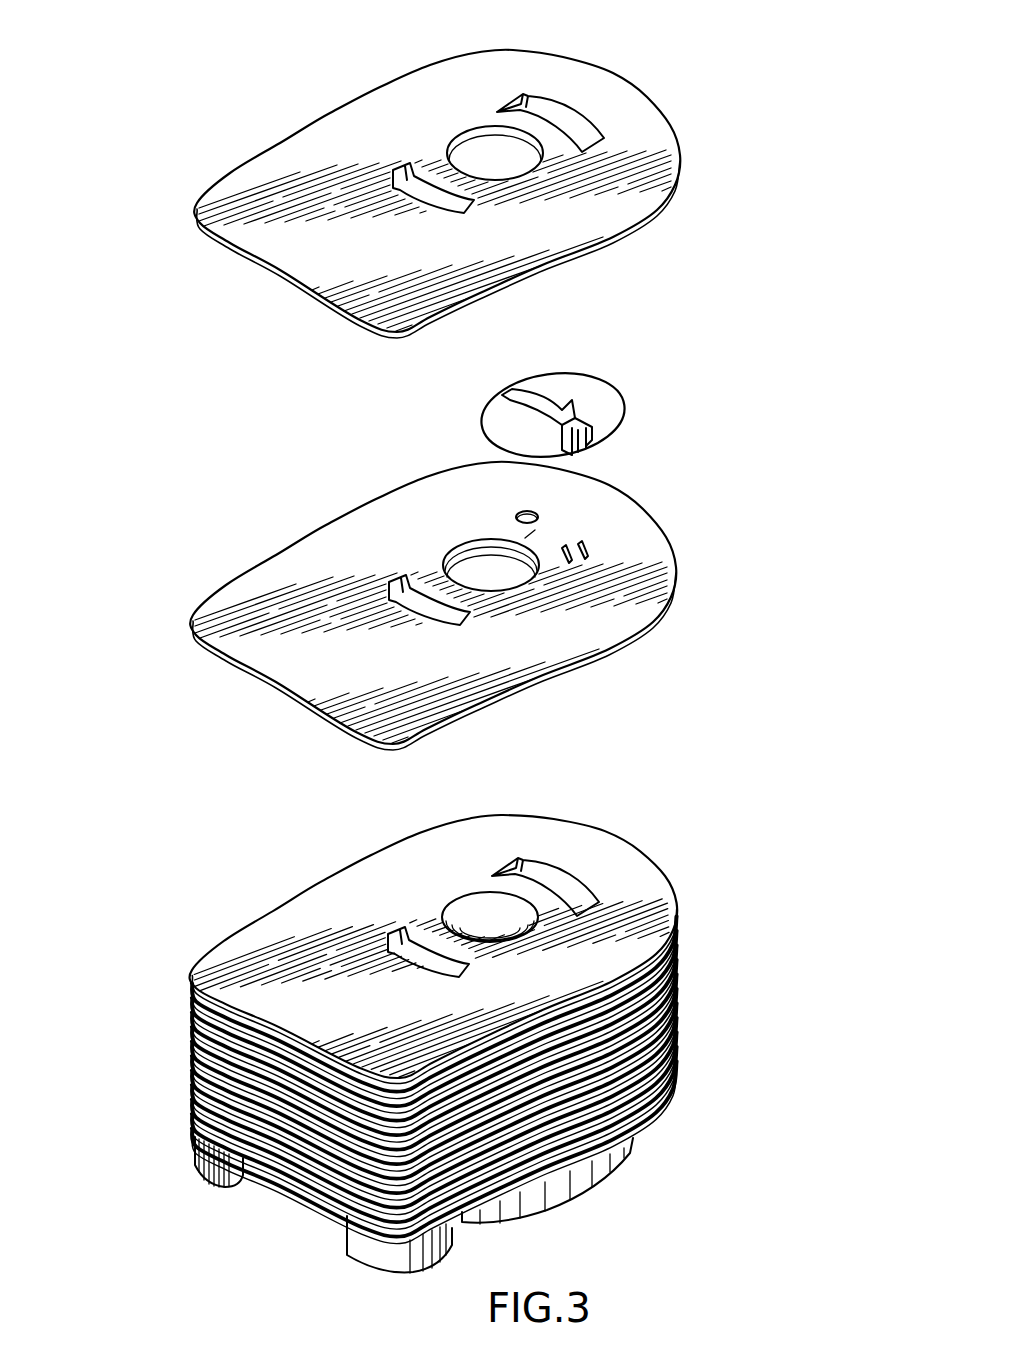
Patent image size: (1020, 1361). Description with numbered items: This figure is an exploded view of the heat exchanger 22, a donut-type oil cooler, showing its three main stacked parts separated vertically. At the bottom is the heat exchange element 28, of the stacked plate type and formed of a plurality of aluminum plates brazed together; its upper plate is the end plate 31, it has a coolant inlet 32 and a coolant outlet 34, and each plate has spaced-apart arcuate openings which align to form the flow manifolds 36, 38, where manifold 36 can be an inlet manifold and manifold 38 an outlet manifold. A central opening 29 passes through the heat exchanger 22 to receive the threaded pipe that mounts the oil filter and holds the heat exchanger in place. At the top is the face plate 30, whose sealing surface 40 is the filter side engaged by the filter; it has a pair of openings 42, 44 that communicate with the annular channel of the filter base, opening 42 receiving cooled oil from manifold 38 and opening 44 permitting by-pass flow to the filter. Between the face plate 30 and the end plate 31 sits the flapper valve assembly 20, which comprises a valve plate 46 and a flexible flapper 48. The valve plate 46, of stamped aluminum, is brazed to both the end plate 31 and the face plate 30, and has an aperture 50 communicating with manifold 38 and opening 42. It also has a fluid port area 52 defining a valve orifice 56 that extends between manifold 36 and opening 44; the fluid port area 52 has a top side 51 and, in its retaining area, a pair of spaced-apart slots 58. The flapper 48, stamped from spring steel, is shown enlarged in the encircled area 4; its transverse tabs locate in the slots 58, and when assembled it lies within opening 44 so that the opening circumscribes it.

The encircled area 4 is at (602, 390).
The flapper valve assembly 20 is at (147, 363).
The heat exchanger 22 is at (748, 68).
The heat exchange element 28 is at (168, 1028).
The opening 29 is at (485, 898).
The face plate 30 is at (268, 178).
The end plate 31 is at (410, 858).
The coolant inlet 32 is at (206, 1190).
The coolant outlet 34 is at (356, 1270).
The manifold 36 is at (562, 886).
The outlet manifold 38 is at (388, 918).
The sealing surface 40 is at (353, 262).
The opening 42 is at (392, 152).
The opening 44 is at (513, 98).
The valve plate 46 is at (282, 555).
The flexible flapper 48 is at (518, 393).
The aperture 50 is at (388, 583).
The top side 51 is at (575, 507).
The fluid port area 52 is at (516, 518).
The valve orifice 56 is at (505, 500).
The slots 58 is at (568, 536).